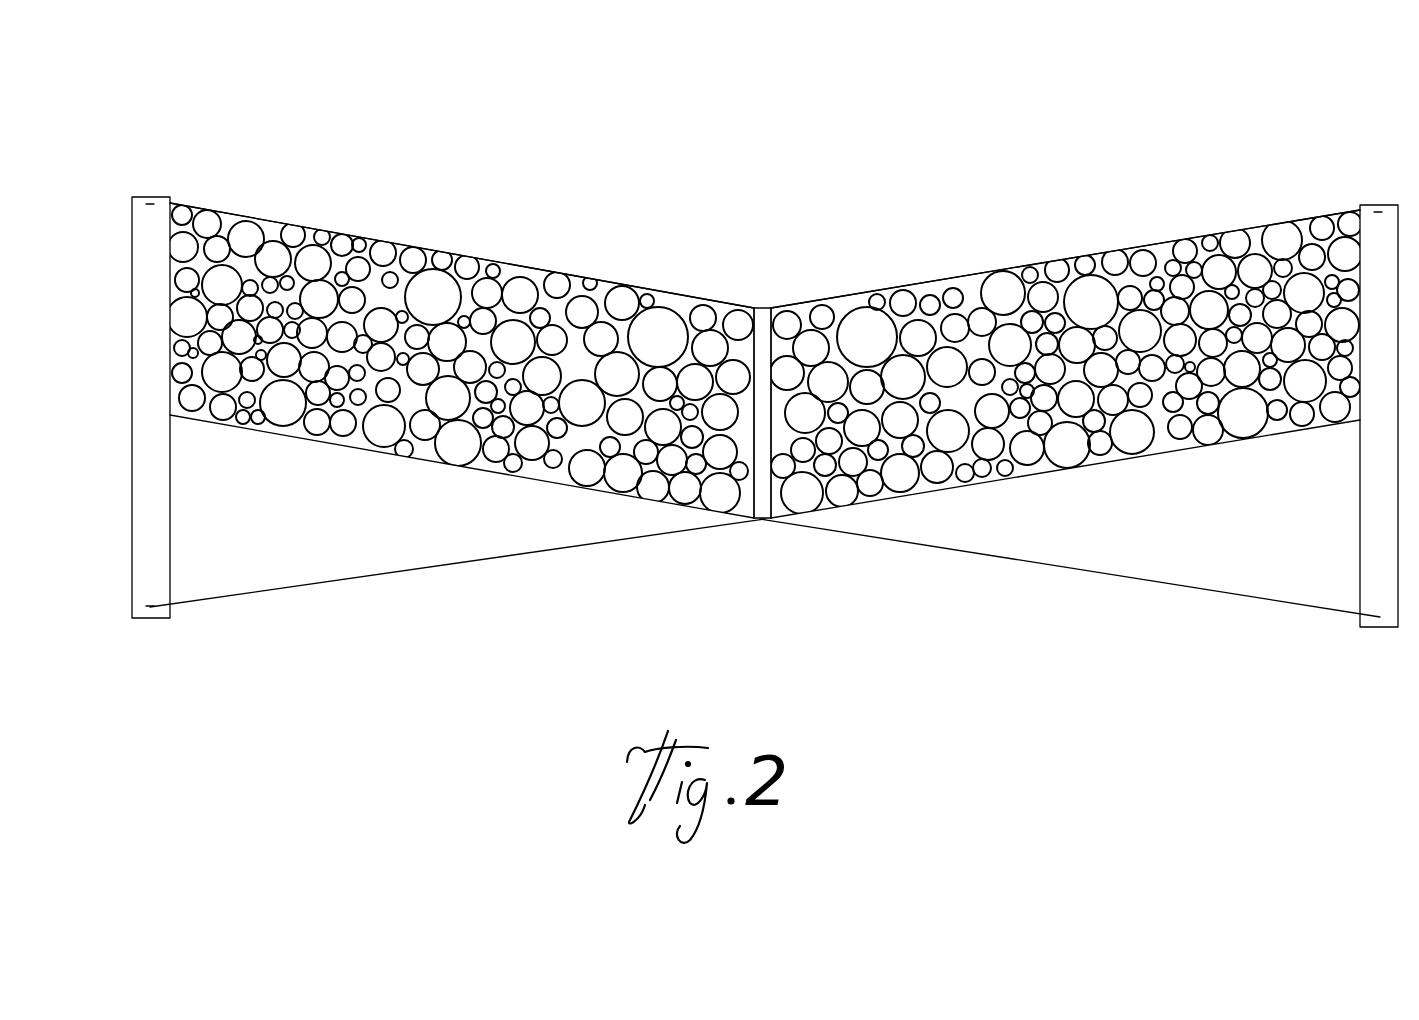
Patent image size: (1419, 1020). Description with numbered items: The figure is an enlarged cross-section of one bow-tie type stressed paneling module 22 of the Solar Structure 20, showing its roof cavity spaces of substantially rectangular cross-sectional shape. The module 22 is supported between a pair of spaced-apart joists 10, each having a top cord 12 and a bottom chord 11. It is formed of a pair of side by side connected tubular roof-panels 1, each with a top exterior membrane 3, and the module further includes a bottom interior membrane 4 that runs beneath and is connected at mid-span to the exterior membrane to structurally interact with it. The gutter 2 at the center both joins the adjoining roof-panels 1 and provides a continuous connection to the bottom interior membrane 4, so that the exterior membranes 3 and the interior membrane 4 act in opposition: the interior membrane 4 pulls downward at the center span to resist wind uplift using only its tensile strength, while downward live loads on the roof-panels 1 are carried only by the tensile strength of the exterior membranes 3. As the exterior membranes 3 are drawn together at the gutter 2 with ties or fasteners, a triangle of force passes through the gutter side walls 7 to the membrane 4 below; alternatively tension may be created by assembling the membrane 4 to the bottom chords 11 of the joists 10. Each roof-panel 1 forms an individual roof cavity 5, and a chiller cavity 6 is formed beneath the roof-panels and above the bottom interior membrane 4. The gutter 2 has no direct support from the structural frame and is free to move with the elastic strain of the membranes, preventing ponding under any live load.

The roof-panel 1 is at (341, 226).
The gutter 2 is at (763, 305).
The top exterior membrane 3 is at (485, 262).
The bottom interior membrane 4 is at (477, 562).
The roof cavity 5 is at (578, 357).
The chiller cavity 6 is at (295, 534).
The gutter side walls 7 is at (762, 397).
The joist 10 is at (148, 387).
The bottom chord 11 is at (153, 622).
The top cord 12 is at (148, 198).
The Solar Structure 20 is at (1181, 648).
The stressed paneling module 22 is at (1214, 156).